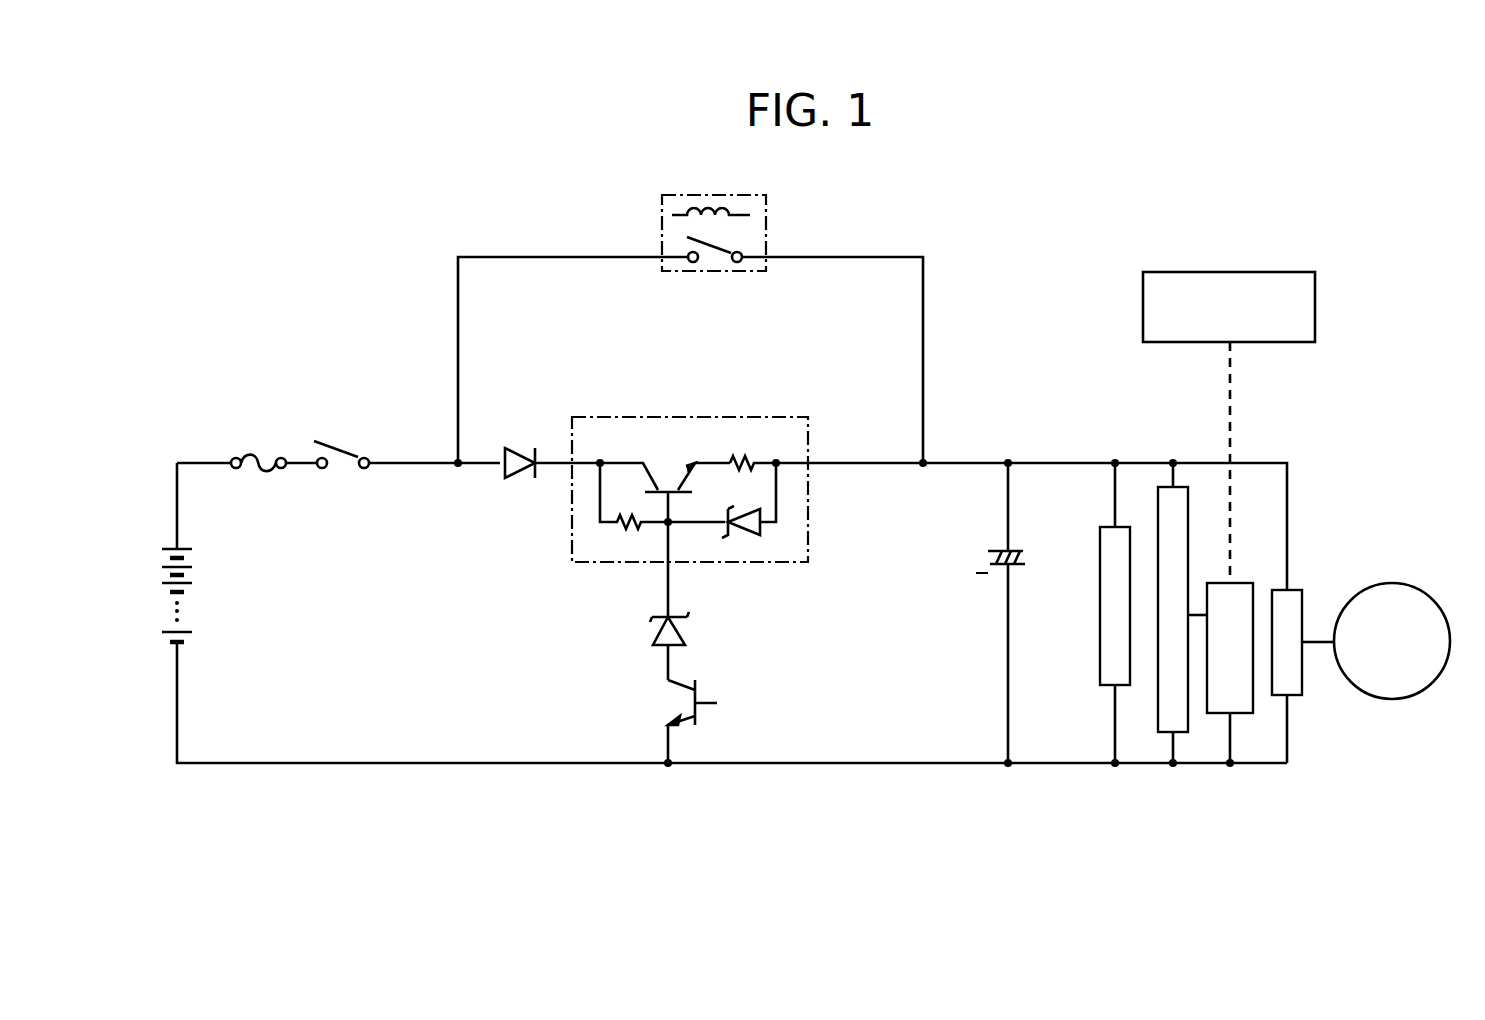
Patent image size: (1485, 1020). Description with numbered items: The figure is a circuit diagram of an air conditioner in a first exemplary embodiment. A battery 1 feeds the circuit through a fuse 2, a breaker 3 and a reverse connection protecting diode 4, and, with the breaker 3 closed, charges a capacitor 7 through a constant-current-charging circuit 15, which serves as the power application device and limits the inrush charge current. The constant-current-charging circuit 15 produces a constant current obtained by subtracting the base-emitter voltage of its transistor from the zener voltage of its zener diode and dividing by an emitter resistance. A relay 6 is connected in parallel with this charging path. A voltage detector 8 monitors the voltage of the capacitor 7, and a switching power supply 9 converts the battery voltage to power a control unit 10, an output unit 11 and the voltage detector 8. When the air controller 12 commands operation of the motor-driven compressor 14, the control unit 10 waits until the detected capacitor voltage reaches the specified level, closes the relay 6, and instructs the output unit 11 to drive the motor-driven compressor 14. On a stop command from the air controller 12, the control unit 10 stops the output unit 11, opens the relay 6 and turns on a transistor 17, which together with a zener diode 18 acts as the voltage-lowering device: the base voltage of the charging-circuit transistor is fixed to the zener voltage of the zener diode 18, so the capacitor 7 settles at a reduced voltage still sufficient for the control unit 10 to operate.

The battery 1 is at (200, 583).
The fuse 2 is at (258, 444).
The breaker 3 is at (344, 444).
The reverse connection protecting diode 4 is at (520, 444).
The relay 6 is at (768, 203).
The capacitor 7 is at (1018, 540).
The voltage detector 8 is at (1120, 527).
The switching power supply 9 is at (1185, 485).
The control unit 10 is at (1240, 583).
The output unit 11 is at (1295, 590).
The air controller 12 is at (1300, 270).
The motor-driven compressor 14 is at (1415, 583).
The constant-current-charging circuit 15 is at (790, 416).
The transistor 17 is at (668, 708).
The zener diode 18 is at (687, 632).